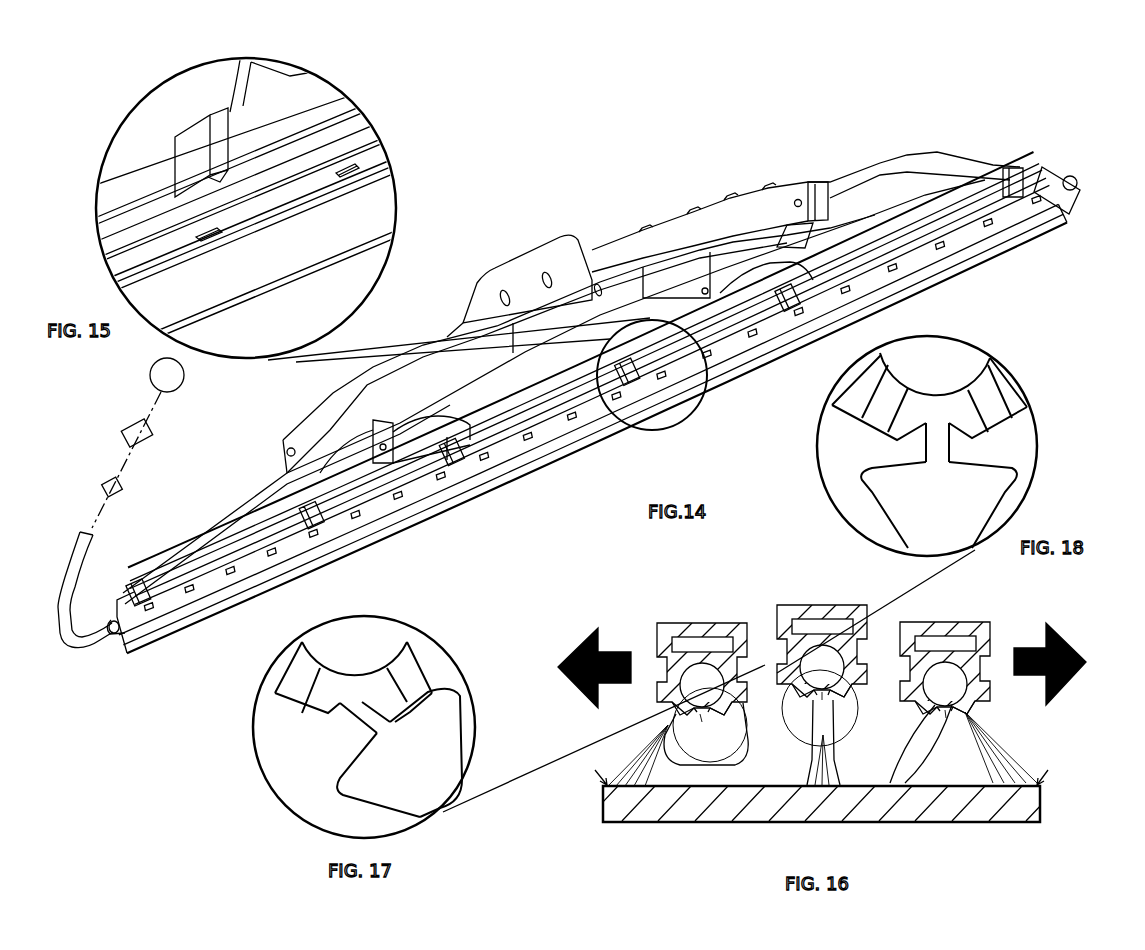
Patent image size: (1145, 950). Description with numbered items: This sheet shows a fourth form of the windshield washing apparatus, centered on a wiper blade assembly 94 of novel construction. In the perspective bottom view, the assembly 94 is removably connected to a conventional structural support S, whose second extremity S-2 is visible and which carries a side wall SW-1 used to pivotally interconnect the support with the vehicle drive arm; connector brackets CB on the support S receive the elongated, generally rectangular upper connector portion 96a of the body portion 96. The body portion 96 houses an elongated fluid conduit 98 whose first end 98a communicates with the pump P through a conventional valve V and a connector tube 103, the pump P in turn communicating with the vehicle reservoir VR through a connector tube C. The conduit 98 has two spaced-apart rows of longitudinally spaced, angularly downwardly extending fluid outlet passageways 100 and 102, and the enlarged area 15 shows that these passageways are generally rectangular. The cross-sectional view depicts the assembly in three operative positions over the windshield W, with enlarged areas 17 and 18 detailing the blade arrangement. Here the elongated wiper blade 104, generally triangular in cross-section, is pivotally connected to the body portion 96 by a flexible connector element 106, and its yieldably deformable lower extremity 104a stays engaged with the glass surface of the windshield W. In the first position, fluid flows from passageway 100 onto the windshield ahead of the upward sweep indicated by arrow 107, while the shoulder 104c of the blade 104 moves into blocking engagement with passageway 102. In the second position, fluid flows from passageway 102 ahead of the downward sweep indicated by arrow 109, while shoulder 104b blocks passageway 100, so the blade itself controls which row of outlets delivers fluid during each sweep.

In FIG. 14, the wiper blade assembly 94 is at (940, 285).
In FIG. 16, the wiper blade assembly 94 is at (801, 594).
In FIG. 18, the body portion 96 is at (1007, 387).
In FIG. 17, the body portion 96 is at (433, 667).
In FIG. 16, the body portion 96 is at (657, 653).
In FIG. 16, the upper connector portion 96a is at (665, 623).
In FIG. 18, the fluid conduit 98 is at (960, 360).
In FIG. 17, the fluid conduit 98 is at (358, 637).
In FIG. 16, the fluid conduit 98 is at (703, 665).
In FIG. 14, the first end of fluid conduit 98a is at (113, 634).
In FIG. 14, the fluid outlet passageway 100 is at (592, 403).
In FIG. 15, the fluid outlet passageway 100 is at (200, 239).
In FIG. 18, the fluid outlet passageway 100 is at (875, 410).
In FIG. 17, the fluid outlet passageway 100 is at (287, 693).
In FIG. 16, the fluid outlet passageway 100 is at (680, 712).
In FIG. 18, the fluid outlet passageway 102 is at (1000, 407).
In FIG. 17, the fluid outlet passageway 102 is at (402, 672).
In FIG. 16, the fluid outlet passageway 102 is at (737, 685).
In FIG. 14, the connector tube 103 is at (72, 545).
In FIG. 14, the wiper blade 104 is at (1023, 233).
In FIG. 15, the wiper blade 104 is at (250, 277).
In FIG. 18, the wiper blade 104 is at (900, 495).
In FIG. 17, the wiper blade 104 is at (438, 742).
In FIG. 16, the wiper blade 104 is at (735, 765).
In FIG. 14, the lower extremity 104a is at (523, 471).
In FIG. 15, the lower extremity 104a is at (335, 260).
In FIG. 16, the lower extremity 104a is at (767, 785).
In FIG. 16, the shoulder 104b is at (843, 722).
In FIG. 17, the shoulder 104c is at (455, 690).
In FIG. 16, the shoulder 104c is at (740, 742).
In FIG. 14, the flexible connector element 106 is at (1062, 204).
In FIG. 18, the flexible connector element 106 is at (940, 447).
In FIG. 17, the flexible connector element 106 is at (363, 718).
In FIG. 16, the flexible connector element 106 is at (700, 725).
In FIG. 16, the arrow 107 is at (576, 652).
In FIG. 16, the arrow 109 is at (1070, 640).
In FIG. 14, the area designated 15 is at (687, 420).
In FIG. 16, the area designated 17 is at (693, 748).
In FIG. 16, the area designated 18 is at (850, 735).
In FIG. 14, the connector brackets CB is at (137, 606).
In FIG. 15, the connector brackets CB is at (245, 151).
In FIG. 14, the structural support S is at (325, 397).
In FIG. 14, the second extremity S-2 is at (904, 141).
In FIG. 14, the side wall SW-1 is at (522, 268).
In FIG. 14, the connector tube C is at (150, 402).
In FIG. 14, the vehicle reservoir VR is at (183, 383).
In FIG. 14, the pump P is at (150, 438).
In FIG. 14, the valve V is at (107, 482).
In FIG. 16, the windshield W is at (1023, 812).